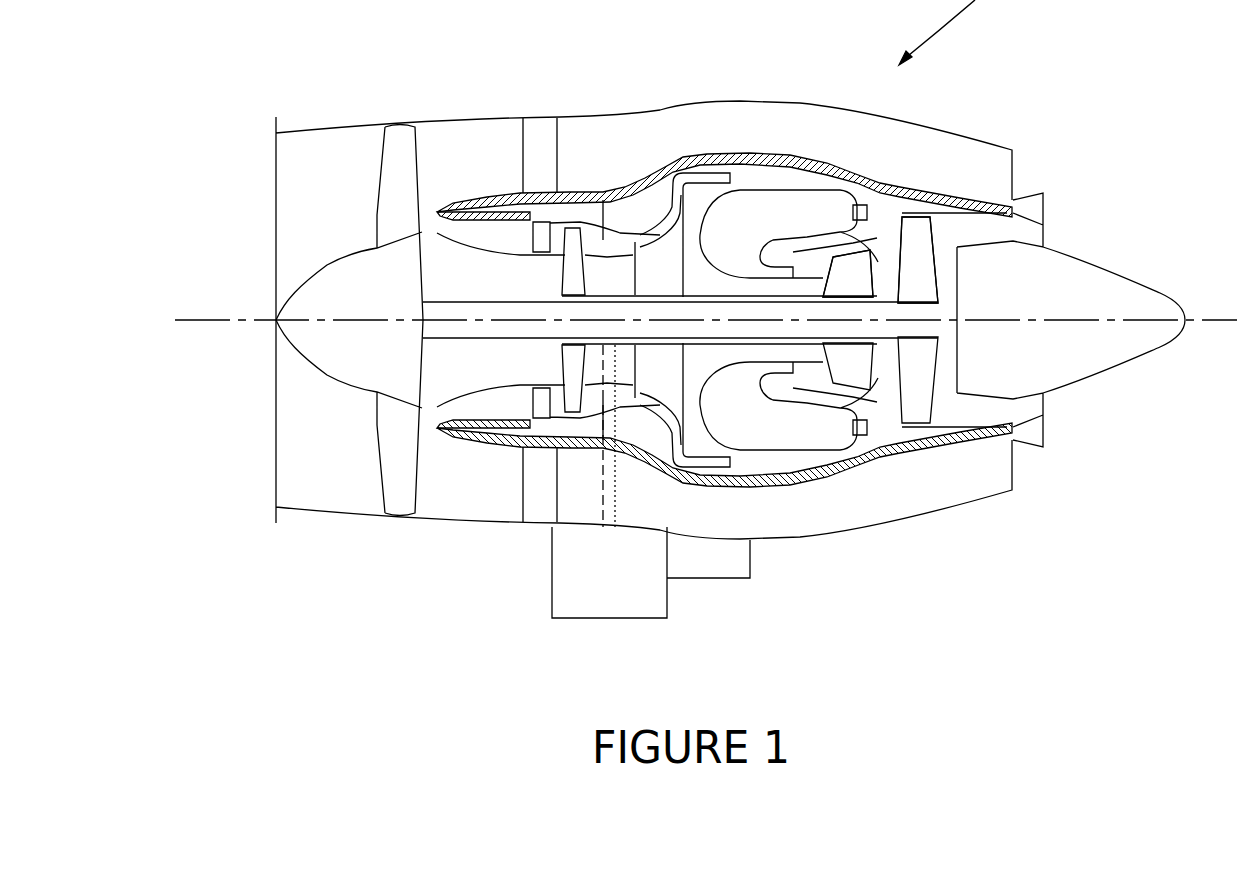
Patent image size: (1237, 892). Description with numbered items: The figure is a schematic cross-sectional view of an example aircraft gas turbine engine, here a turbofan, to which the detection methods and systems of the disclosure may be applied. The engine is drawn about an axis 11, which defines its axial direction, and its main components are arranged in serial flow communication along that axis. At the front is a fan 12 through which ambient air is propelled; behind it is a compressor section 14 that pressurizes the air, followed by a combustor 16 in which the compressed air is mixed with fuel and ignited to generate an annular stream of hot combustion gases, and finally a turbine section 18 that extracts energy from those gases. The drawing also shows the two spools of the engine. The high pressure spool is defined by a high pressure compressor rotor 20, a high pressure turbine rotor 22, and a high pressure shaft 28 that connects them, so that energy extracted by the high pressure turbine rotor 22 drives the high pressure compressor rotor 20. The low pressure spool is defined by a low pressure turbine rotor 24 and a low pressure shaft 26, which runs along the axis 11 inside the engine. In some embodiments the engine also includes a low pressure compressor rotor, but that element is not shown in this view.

The axis 11 is at (1216, 320).
The fan 12 is at (393, 445).
The compressor section 14 is at (603, 208).
The combustor 16 is at (777, 205).
The turbine section 18 is at (883, 375).
The high pressure compressor rotor 20 is at (657, 385).
The high pressure turbine rotor 22 is at (850, 275).
The low pressure turbine rotor 24 is at (917, 277).
The low pressure shaft 26 is at (875, 333).
The high pressure shaft 28 is at (758, 343).